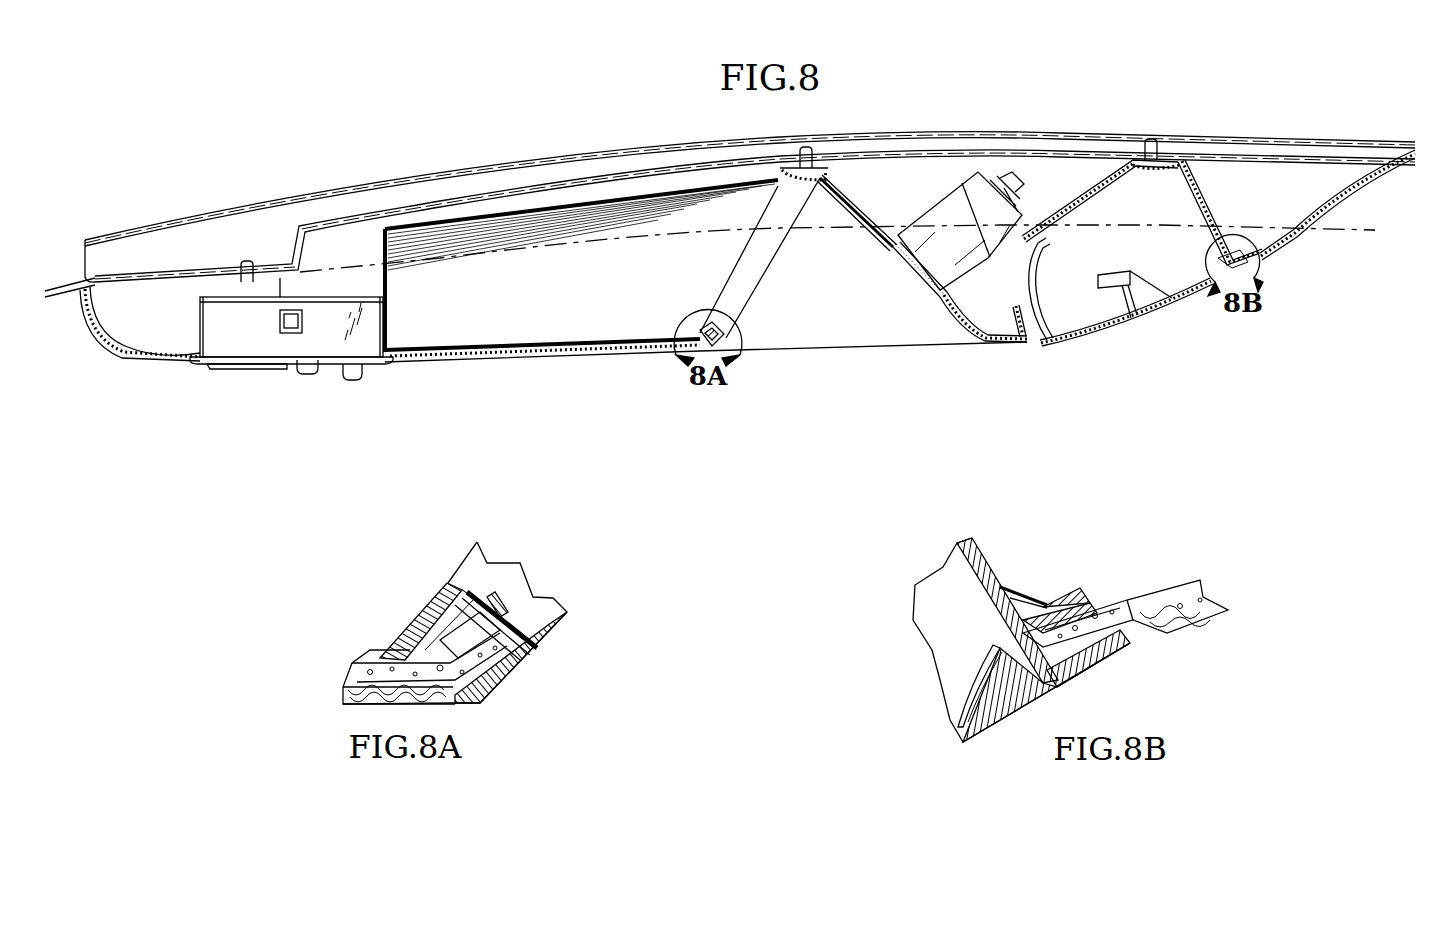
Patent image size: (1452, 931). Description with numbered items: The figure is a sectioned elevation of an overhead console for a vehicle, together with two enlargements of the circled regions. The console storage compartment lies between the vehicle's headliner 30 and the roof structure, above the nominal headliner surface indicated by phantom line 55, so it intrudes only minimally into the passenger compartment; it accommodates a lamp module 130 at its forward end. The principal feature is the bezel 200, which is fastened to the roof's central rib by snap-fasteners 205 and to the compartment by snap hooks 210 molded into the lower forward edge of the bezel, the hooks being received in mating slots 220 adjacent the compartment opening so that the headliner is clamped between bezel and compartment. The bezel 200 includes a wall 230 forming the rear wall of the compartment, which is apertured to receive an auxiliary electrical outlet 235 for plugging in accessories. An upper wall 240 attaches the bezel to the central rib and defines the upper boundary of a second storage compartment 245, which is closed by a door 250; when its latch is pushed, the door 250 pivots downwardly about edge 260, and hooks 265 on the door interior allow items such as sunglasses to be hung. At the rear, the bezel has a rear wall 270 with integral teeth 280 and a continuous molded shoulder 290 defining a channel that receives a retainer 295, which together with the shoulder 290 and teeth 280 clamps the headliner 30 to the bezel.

In FIG. 8B, the headliner 30 is at (1183, 633).
In FIG. 8, the phantom line 55 is at (1367, 232).
In FIG. 8, the lamp module 130 is at (287, 365).
In FIG. 8, the bezel 200 is at (1100, 340).
In FIG. 8, the snap-fasteners 205 is at (253, 274).
In FIG. 8A, the snap hooks 210 is at (488, 597).
In FIG. 8A, the mating slots 220 is at (482, 593).
In FIG. 8, the wall 230 is at (947, 313).
In FIG. 8, the auxiliary electrical outlet 235 is at (960, 212).
In FIG. 8, the upper wall 240 is at (1085, 200).
In FIG. 8, the storage compartment 245 is at (1123, 219).
In FIG. 8, the door 250 is at (1127, 320).
In FIG. 8, the edge 260 is at (1048, 345).
In FIG. 8, the hooks 265 is at (1128, 270).
In FIG. 8, the rear wall 270 is at (1198, 190).
In FIG. 8B, the rear wall 270 is at (973, 540).
In FIG. 8B, the teeth 280 is at (1013, 598).
In FIG. 8B, the shoulder 290 is at (1093, 663).
In FIG. 8B, the retainer 295 is at (1080, 597).